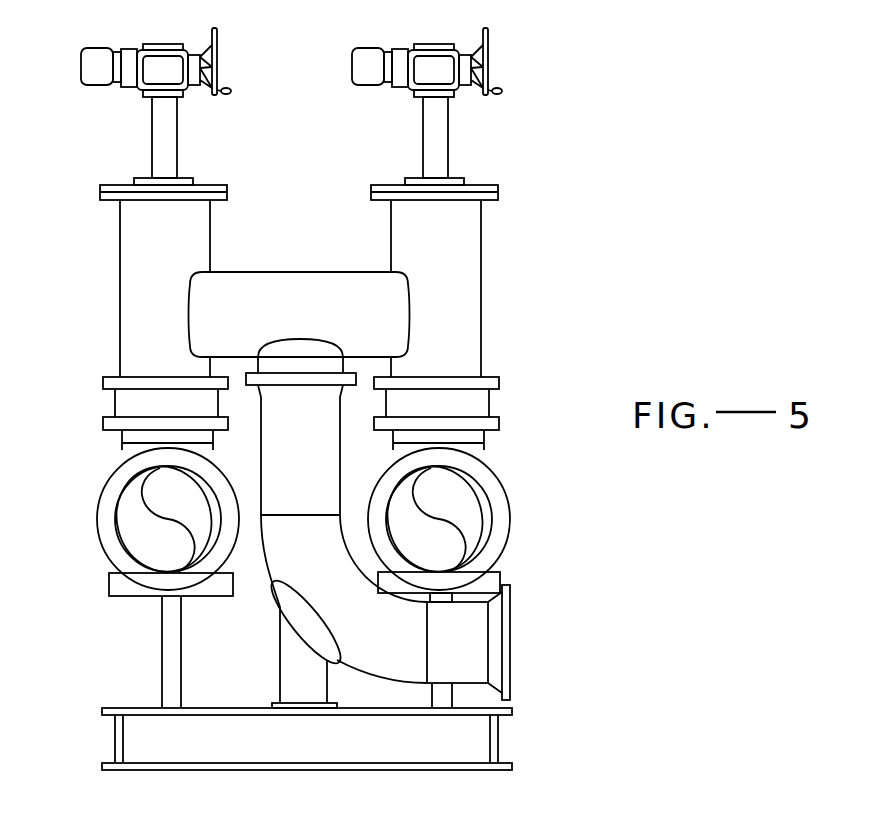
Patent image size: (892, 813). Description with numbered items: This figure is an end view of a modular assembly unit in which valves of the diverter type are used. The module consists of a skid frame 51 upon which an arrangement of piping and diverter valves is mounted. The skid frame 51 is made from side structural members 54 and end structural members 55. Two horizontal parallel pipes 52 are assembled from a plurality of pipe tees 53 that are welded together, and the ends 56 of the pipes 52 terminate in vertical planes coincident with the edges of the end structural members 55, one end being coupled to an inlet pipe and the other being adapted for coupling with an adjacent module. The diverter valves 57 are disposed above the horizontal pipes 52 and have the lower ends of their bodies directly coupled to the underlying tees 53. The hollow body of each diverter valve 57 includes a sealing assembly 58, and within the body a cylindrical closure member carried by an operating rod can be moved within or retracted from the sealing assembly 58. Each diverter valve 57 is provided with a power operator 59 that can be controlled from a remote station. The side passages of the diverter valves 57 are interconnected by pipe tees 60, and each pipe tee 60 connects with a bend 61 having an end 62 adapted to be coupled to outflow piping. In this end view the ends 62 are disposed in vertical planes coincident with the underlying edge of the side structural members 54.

The skid frame 51 is at (384, 774).
The horizontal parallel pipes 52 is at (105, 812).
The pipe tees 53 is at (128, 452).
The side structural members 54 is at (118, 737).
The end structural members 55 is at (367, 760).
The ends of the pipes 56 is at (113, 486).
The diverter valves 57 is at (132, 267).
The sealing assembly 58 is at (122, 405).
The power operator 59 is at (152, 75).
The pipe tees 60 is at (315, 282).
The bend 61 is at (278, 562).
The end 62 is at (503, 633).